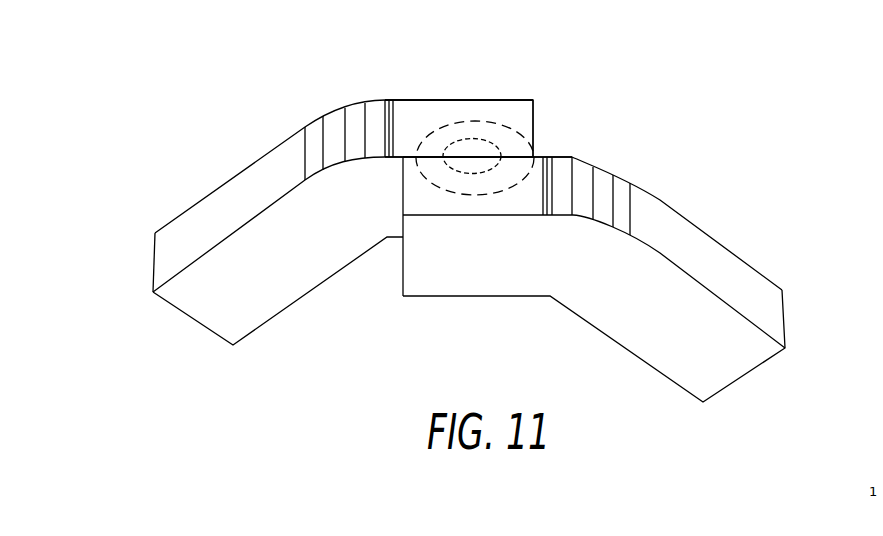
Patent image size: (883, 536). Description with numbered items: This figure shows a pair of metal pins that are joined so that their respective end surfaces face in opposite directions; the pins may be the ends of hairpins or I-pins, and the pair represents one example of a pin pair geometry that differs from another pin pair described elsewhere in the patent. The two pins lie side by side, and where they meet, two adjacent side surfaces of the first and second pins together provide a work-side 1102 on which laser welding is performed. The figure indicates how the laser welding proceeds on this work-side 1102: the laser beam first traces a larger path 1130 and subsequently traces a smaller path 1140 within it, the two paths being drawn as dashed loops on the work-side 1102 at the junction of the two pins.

The work-side 1102 is at (499, 112).
The larger path 1130 is at (453, 122).
The smaller path 1140 is at (445, 166).